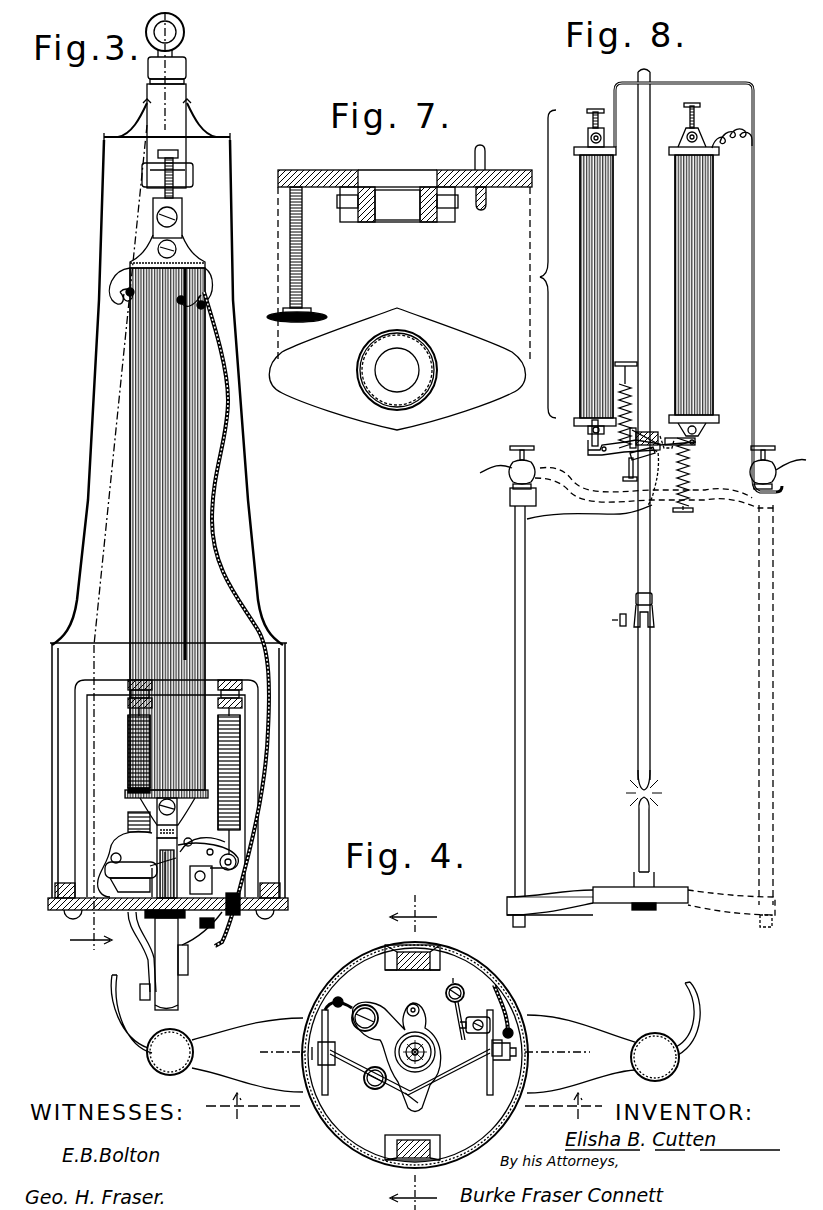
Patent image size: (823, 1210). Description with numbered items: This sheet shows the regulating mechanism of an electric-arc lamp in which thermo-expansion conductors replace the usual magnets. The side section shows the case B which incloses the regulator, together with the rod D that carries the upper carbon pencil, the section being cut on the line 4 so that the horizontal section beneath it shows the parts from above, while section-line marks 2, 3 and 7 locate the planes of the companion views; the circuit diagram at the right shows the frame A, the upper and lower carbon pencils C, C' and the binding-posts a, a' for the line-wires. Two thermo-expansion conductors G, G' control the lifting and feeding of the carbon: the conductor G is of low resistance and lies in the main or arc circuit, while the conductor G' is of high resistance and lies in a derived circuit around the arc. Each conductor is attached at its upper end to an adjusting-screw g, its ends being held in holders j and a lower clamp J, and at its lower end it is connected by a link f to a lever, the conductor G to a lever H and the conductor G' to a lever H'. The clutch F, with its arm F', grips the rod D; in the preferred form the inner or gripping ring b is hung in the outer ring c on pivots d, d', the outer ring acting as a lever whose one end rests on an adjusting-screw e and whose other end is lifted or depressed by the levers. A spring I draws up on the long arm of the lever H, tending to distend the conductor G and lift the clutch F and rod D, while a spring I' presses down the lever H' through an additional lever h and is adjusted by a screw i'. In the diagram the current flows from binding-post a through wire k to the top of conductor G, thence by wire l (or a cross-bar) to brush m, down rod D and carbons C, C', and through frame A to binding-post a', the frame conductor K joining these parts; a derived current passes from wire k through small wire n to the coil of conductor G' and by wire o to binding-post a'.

In FIG. 3, the section line 2- 2 is at (119, 482).
In FIG. 4, the section line 2- 2 is at (405, 1081).
In FIG. 4, the section line 3- 3 is at (413, 1044).
In FIG. 3, the section line 4 is at (250, 730).
In FIG. 3, the section line 7- 7 is at (85, 727).
In FIG. 8, the frame A is at (528, 660).
In FIG. 3, the case B is at (168, 509).
In FIG. 8, the upper carbon pencil C is at (645, 753).
In FIG. 8, the lower carbon pencil C' is at (652, 842).
In FIG. 3, the rod D is at (178, 990).
In FIG. 8, the rod D is at (651, 424).
In FIG. 4, the rod D is at (428, 1044).
In FIG. 3, the clutch F is at (123, 854).
In FIG. 7, the clutch F is at (397, 369).
In FIG. 8, the clutch lever arm F' is at (661, 470).
In FIG. 4, the clutch lever arm F' is at (423, 1097).
In FIG. 8, the low-resistance thermo-expansion conductor G is at (604, 286).
In FIG. 4, the low-resistance thermo-expansion conductor G is at (325, 1054).
In FIG. 3, the high-resistance thermo-expansion conductor G' is at (156, 529).
In FIG. 8, the high-resistance thermo-expansion conductor G' is at (703, 285).
In FIG. 4, the high-resistance thermo-expansion conductor G' is at (492, 1058).
In FIG. 3, the lever H is at (140, 875).
In FIG. 7, the lever H is at (496, 202).
In FIG. 8, the lever H is at (624, 451).
In FIG. 4, the lever H is at (370, 1079).
In FIG. 7, the lever H' is at (491, 153).
In FIG. 8, the lever H' is at (663, 430).
In FIG. 4, the lever H' is at (449, 1072).
In FIG. 3, the spring I is at (130, 736).
In FIG. 8, the spring I is at (624, 405).
In FIG. 4, the spring I is at (366, 1082).
In FIG. 3, the spring I' is at (235, 781).
In FIG. 8, the spring I' is at (687, 475).
In FIG. 4, the spring I' is at (448, 1009).
In FIG. 3, the lower clamp J is at (180, 810).
In FIG. 8, the frame conductor K is at (754, 325).
In FIG. 7, the binding-post a is at (384, 370).
In FIG. 8, the binding-post a is at (778, 467).
In FIG. 8, the binding-post a' is at (507, 467).
In FIG. 7, the inner gripping ring b is at (416, 204).
In FIG. 7, the outer ring c is at (405, 282).
In FIG. 7, the pivot d is at (413, 302).
In FIG. 7, the pivot d' is at (340, 208).
In FIG. 7, the adjusting-screw e is at (302, 258).
In FIG. 8, the adjusting-screw e is at (626, 476).
In FIG. 3, the link f is at (167, 867).
In FIG. 8, the link f is at (592, 432).
In FIG. 3, the adjusting-screw g is at (167, 174).
In FIG. 3, the additional lever h is at (195, 867).
In FIG. 4, the additional lever h is at (475, 1039).
In FIG. 3, the screw i' is at (224, 697).
In FIG. 3, the clamp j is at (196, 258).
In FIG. 8, the clamp j is at (718, 430).
In FIG. 3, the wire k is at (238, 930).
In FIG. 4, the wire k is at (499, 1009).
In FIG. 4, the wire l is at (353, 1020).
In FIG. 8, the brush m is at (650, 430).
In FIG. 3, the small wire n is at (160, 288).
In FIG. 8, the small wire n is at (732, 129).
In FIG. 3, the wire o is at (175, 956).
In FIG. 8, the wire o is at (650, 687).